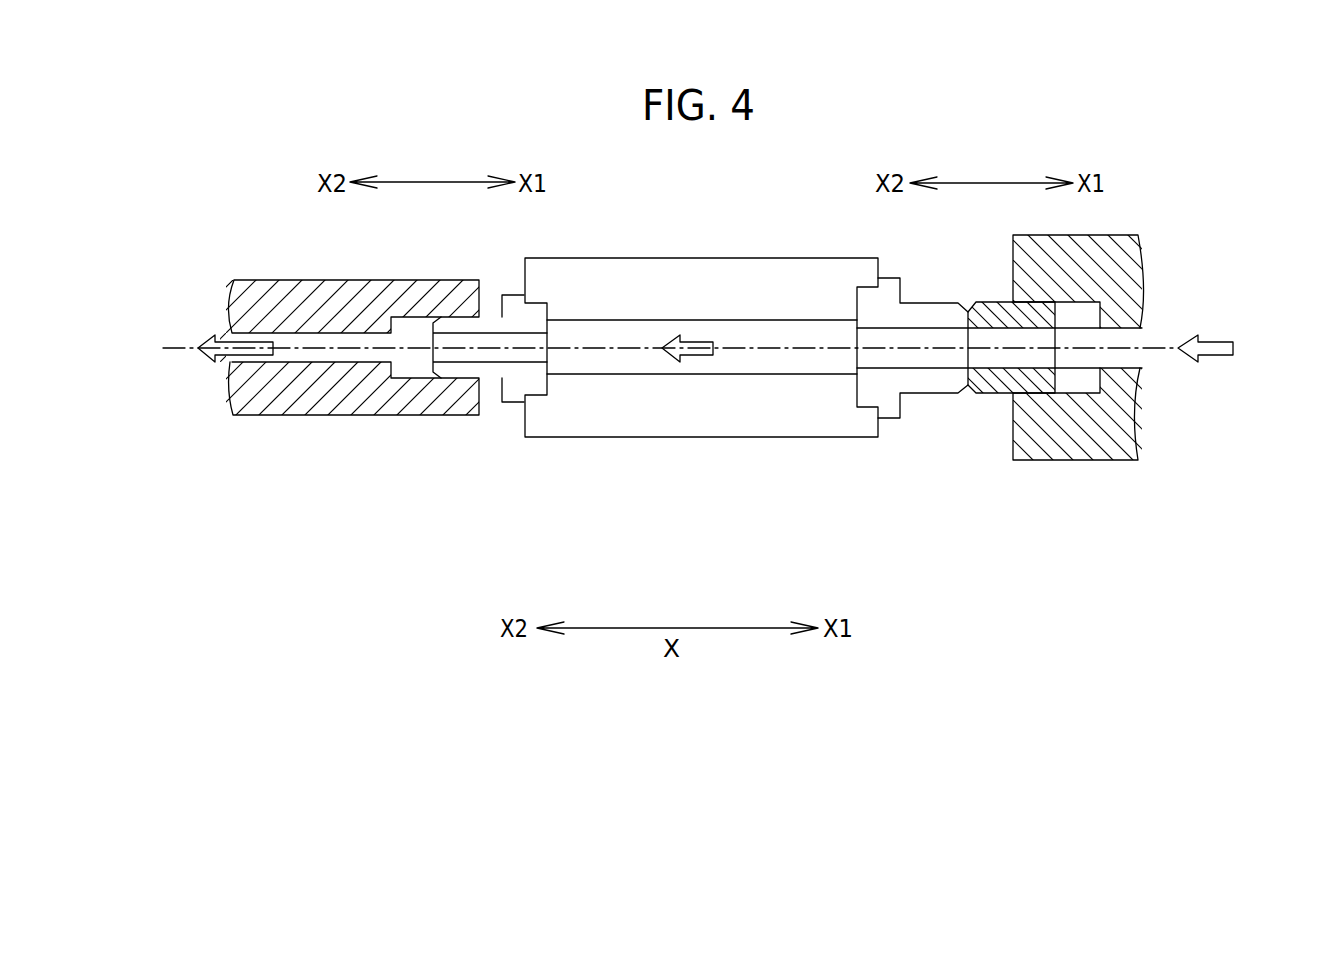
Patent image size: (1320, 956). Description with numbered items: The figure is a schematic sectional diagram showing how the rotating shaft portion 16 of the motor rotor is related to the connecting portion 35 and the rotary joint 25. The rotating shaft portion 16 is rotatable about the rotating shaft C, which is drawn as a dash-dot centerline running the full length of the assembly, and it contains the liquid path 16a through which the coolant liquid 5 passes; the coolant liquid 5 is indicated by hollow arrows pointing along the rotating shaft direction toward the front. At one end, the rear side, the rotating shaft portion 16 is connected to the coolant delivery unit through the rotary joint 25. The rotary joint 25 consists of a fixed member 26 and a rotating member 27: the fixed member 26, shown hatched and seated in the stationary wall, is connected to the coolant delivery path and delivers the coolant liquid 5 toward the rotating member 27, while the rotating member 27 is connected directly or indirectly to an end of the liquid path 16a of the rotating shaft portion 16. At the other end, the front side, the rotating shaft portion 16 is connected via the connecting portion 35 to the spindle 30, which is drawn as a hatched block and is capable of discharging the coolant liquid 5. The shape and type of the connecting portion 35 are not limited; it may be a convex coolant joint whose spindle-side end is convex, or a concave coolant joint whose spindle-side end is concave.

The coolant liquid 5 is at (205, 358).
The rotating shaft portion 16 is at (637, 422).
The liquid path 16a is at (820, 376).
The rotary joint 25 is at (999, 411).
The fixed member 26 is at (1000, 388).
The rotating member 27 is at (927, 386).
The spindle 30 is at (323, 408).
The connecting portion 35 is at (512, 395).
The rotating shaft C is at (175, 345).